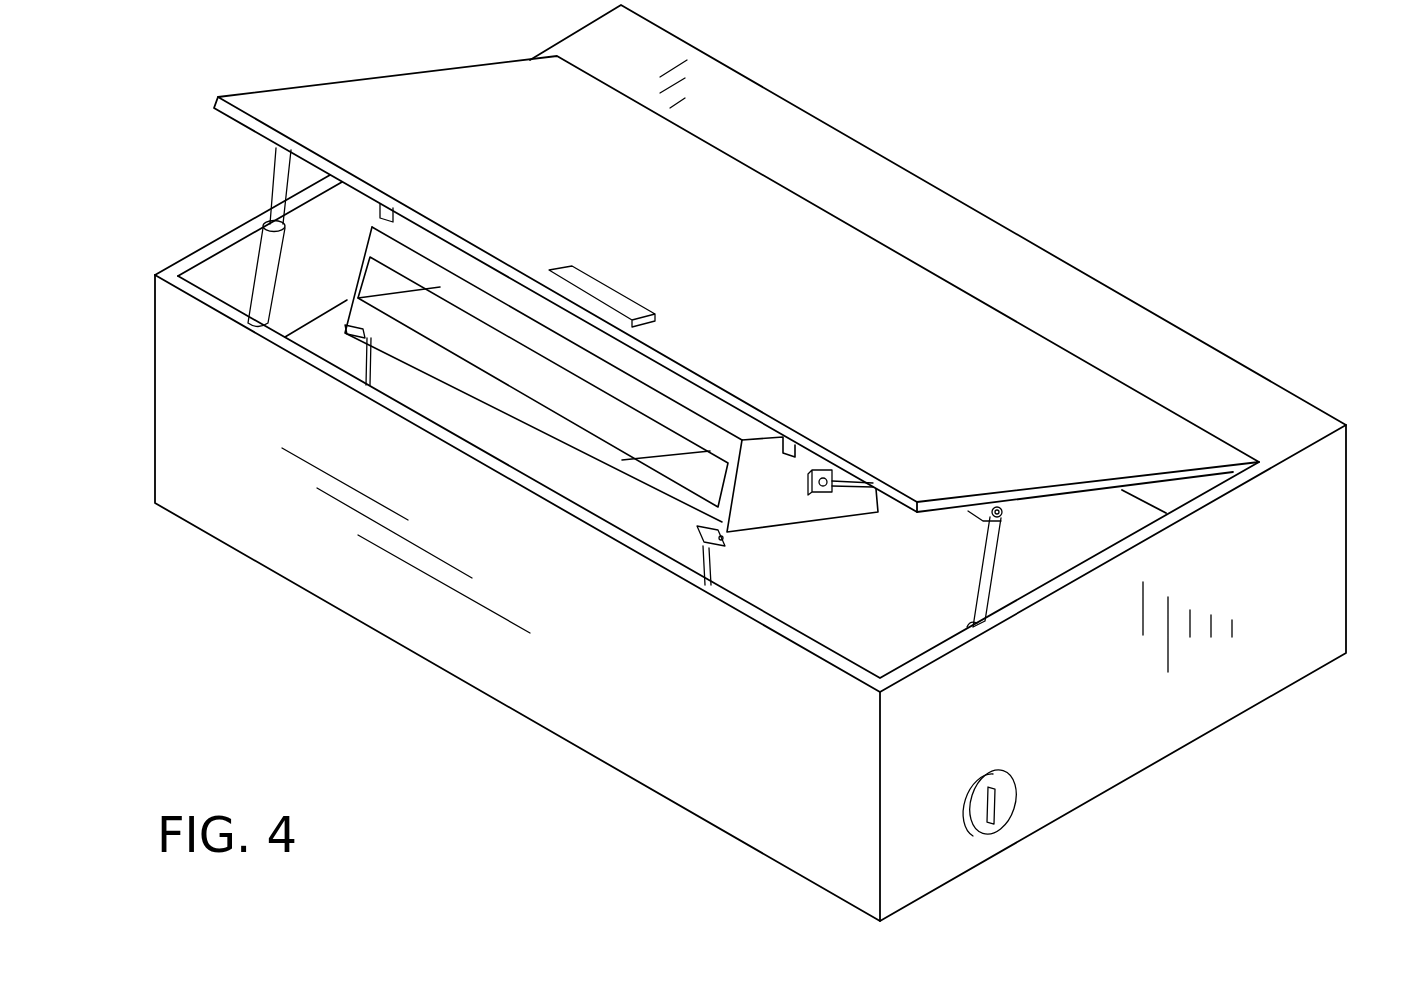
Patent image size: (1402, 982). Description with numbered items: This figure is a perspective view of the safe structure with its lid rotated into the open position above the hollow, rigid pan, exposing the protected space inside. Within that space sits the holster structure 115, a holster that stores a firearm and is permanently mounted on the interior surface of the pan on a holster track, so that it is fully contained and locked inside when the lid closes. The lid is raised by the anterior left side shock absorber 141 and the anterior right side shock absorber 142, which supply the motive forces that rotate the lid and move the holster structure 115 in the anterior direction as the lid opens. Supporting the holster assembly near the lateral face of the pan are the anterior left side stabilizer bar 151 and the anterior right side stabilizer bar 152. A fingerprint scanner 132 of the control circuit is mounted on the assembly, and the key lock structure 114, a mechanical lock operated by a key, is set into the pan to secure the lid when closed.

The key lock structure 114 is at (990, 805).
The holster structure 115 is at (760, 500).
The fingerprint scanner 132 is at (612, 285).
The anterior left side shock absorber 141 is at (997, 548).
The anterior right side shock absorber 142 is at (278, 163).
The anterior left side stabilizer bar 151 is at (714, 550).
The anterior right side stabilizer bar 152 is at (368, 340).